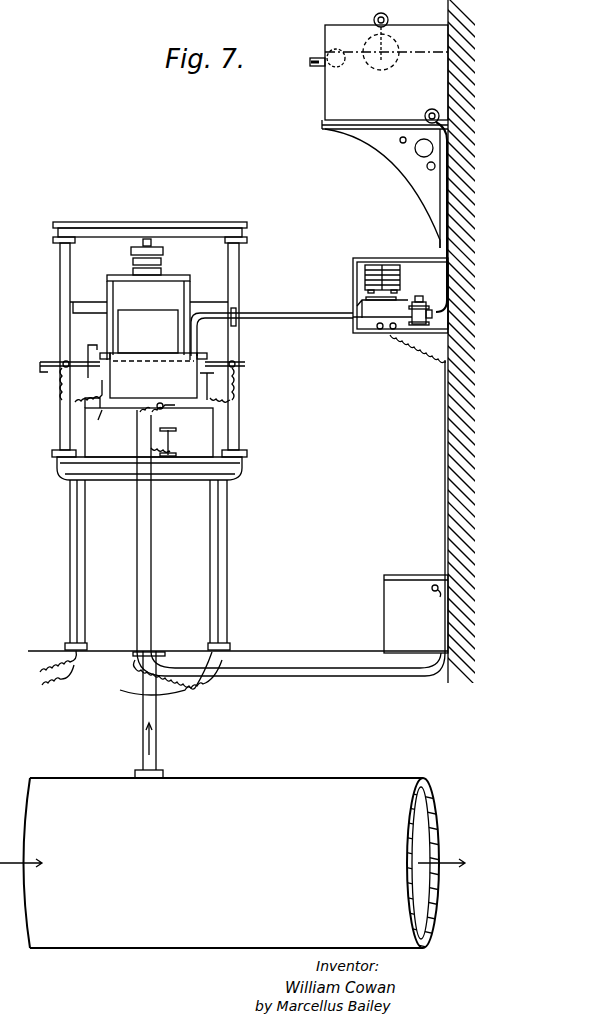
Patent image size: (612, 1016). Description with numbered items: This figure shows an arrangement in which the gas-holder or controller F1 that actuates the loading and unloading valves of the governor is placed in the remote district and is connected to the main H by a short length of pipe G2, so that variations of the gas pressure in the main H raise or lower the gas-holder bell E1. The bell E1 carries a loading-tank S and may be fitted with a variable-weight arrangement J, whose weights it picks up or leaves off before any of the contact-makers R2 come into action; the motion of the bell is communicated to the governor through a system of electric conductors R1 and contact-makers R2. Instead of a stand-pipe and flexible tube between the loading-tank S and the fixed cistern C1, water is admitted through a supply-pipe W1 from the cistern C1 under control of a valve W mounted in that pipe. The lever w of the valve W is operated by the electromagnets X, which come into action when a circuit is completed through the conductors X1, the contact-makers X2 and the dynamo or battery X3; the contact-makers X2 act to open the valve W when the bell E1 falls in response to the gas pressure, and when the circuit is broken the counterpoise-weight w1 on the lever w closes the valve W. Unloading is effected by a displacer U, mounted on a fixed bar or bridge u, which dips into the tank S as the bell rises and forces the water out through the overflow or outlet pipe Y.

The cistern C1 is at (379, 66).
The supply-pipe W1 is at (446, 226).
The electromagnets X is at (365, 274).
The valve W is at (421, 300).
The lever w is at (357, 301).
The counterpoise-weight w1 is at (358, 318).
The conductors X1 is at (446, 376).
The dynamo or battery X3 is at (416, 614).
The variable-weight arrangement J is at (163, 272).
The fixed bar or bridge u is at (149, 311).
The displacer U is at (148, 331).
The loading-tank S is at (153, 375).
The contact-makers R2 is at (88, 355).
The gas-holder bell E1 is at (149, 427).
The overflow or outlet pipe Y is at (96, 421).
The contact-makers X2 is at (172, 435).
The auxiliary gas-holder or controller F1 is at (175, 546).
The conductors R1 is at (122, 690).
The pipe G2 is at (157, 717).
The main H is at (232, 864).